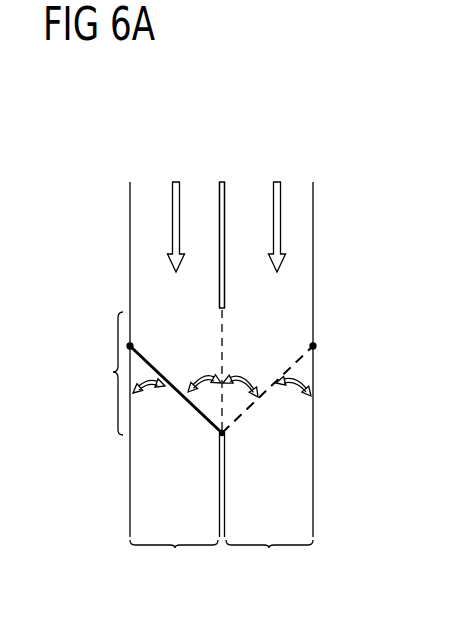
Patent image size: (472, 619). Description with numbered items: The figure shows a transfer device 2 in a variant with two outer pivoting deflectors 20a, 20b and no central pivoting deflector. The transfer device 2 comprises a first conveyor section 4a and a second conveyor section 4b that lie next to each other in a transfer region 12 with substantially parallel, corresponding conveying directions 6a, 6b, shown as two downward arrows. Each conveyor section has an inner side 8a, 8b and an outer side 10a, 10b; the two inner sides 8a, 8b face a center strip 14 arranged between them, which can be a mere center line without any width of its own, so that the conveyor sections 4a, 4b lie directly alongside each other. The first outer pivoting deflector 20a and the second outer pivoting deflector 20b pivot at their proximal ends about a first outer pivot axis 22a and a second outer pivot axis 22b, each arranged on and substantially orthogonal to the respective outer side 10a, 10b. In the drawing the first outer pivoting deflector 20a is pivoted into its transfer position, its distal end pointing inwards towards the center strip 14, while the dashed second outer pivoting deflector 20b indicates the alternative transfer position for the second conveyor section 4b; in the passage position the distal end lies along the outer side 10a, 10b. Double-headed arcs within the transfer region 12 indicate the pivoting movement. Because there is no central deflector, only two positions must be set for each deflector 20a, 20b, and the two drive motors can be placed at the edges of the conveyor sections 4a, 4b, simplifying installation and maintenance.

The transfer device 2 is at (82, 133).
The first conveyor section 4a is at (174, 563).
The second conveyor section 4b is at (269, 563).
The first conveying direction 6a is at (171, 227).
The second conveying direction 6b is at (282, 227).
The first inner side 8a is at (218, 208).
The second inner side 8b is at (226, 232).
The first outer side 10a is at (131, 199).
The second outer side 10b is at (312, 199).
The transfer region 12 is at (98, 359).
The center strip 14 is at (223, 180).
The first outer pivoting deflector 20a is at (190, 405).
The second outer pivoting deflector 20b is at (312, 442).
The first outer pivot axis 22a is at (132, 345).
The second outer pivot axis 22b is at (311, 345).